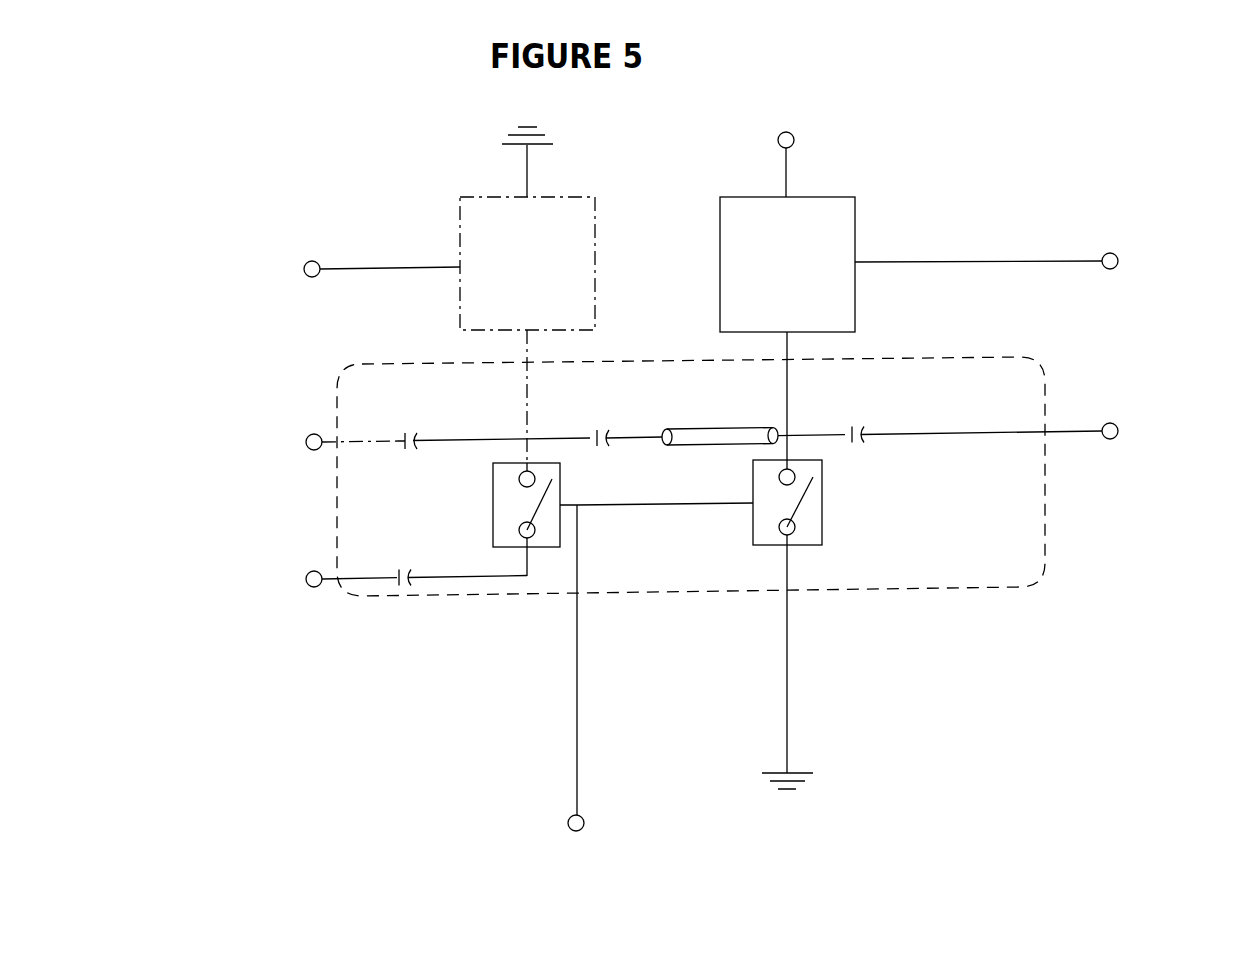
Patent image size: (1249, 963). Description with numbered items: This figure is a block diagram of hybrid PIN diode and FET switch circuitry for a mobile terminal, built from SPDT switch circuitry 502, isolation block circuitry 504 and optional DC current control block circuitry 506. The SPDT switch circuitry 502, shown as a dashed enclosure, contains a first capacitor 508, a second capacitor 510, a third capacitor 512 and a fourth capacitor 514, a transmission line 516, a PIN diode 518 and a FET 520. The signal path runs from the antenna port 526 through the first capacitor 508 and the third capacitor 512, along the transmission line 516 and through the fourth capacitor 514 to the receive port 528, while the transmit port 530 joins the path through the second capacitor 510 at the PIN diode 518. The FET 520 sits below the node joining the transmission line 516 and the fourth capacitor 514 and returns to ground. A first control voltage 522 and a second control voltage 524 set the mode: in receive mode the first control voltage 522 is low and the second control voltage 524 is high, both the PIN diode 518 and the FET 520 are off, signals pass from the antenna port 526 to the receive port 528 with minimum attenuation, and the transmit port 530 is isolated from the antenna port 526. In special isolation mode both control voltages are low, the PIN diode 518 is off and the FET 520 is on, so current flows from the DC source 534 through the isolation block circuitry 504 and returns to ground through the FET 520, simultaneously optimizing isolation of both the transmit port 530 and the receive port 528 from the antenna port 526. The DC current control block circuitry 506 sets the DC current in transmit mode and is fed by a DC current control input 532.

The SPDT switch circuitry 502 is at (503, 597).
The isolation block circuitry 504 is at (718, 261).
The DC current control block circuitry 506 is at (460, 228).
The capacitor C1 508 is at (409, 443).
The capacitor C2 510 is at (400, 572).
The capacitor C3 512 is at (590, 445).
The capacitor C4 514 is at (860, 438).
The transmission line TRL-2 516 is at (725, 443).
The PIN diode S1 518 is at (492, 527).
The FET S2 520 is at (757, 523).
The Vcontrol1 522 is at (568, 831).
The Vcontrol2 524 is at (1119, 262).
The ANT port 526 is at (309, 451).
The RX port 528 is at (1112, 440).
The TX port 530 is at (308, 590).
The DC current control input 532 is at (309, 277).
The DC source 534 is at (792, 146).